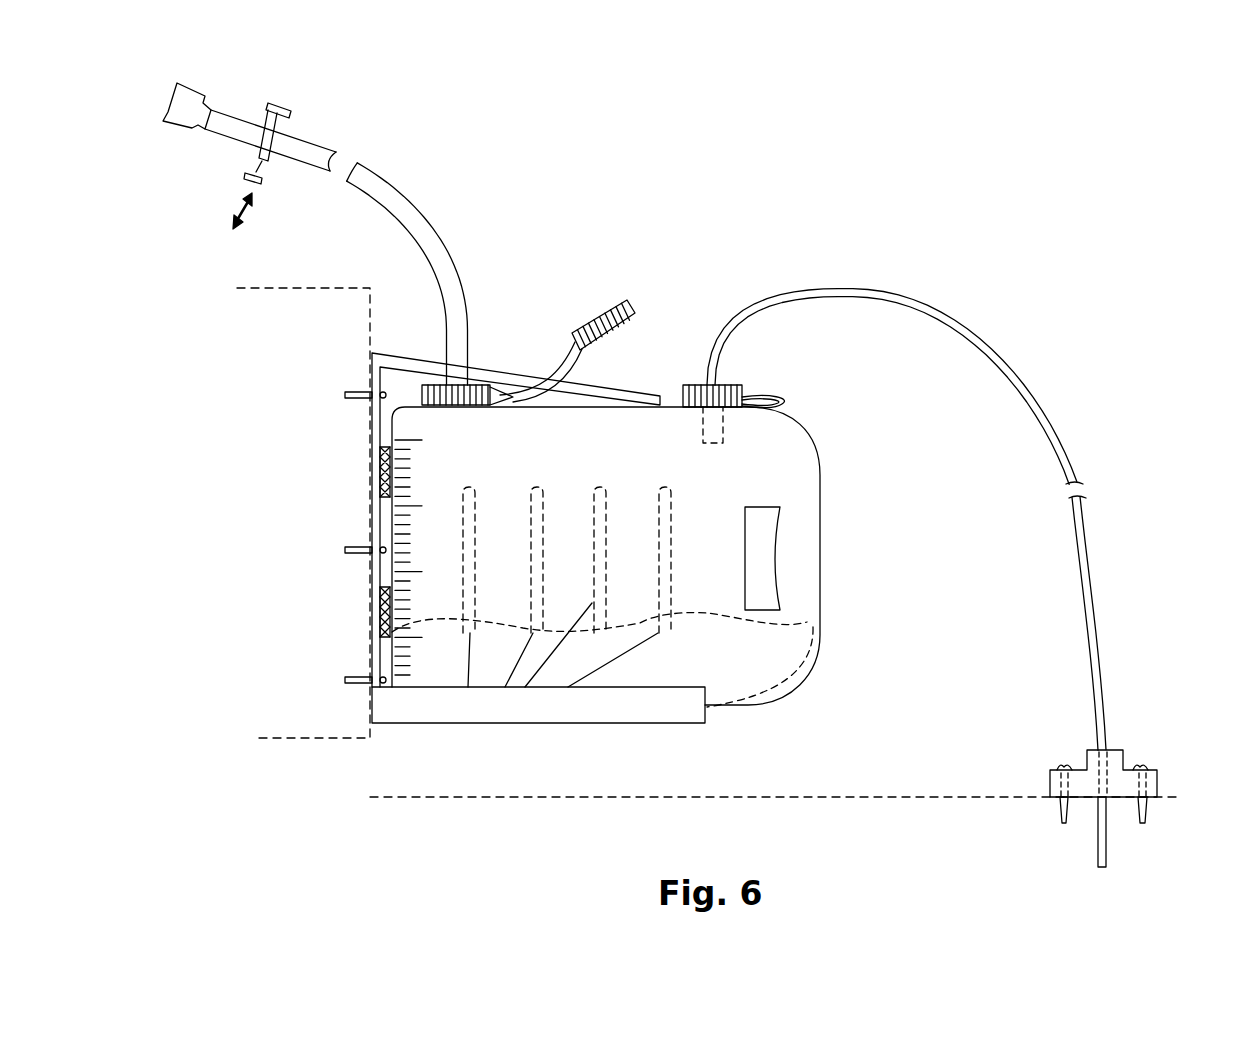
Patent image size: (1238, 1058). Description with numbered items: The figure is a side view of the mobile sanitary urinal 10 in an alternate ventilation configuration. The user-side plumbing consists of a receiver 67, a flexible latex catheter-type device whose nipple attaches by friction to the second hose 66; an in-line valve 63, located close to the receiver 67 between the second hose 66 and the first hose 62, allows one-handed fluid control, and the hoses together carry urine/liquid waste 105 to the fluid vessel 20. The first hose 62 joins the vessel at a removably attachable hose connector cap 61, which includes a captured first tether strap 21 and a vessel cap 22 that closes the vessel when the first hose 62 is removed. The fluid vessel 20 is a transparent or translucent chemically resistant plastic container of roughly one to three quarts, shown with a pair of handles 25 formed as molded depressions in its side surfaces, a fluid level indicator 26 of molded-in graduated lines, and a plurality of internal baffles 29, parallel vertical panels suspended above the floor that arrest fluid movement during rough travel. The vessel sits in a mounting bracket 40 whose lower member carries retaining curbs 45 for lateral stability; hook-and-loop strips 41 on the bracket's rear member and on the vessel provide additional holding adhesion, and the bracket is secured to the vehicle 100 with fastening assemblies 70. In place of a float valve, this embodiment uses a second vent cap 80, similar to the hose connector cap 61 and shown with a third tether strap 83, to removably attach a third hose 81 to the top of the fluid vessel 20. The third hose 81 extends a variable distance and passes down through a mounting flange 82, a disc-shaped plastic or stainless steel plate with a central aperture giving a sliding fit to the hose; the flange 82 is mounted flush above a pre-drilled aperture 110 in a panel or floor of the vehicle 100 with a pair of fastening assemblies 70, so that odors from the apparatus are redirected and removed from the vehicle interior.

The mobile sanitary urinal 10 is at (990, 191).
The fluid vessel 20 is at (820, 547).
The first tether strap 21 is at (548, 373).
The vessel cap 22 is at (598, 340).
The handles 25 is at (780, 593).
The fluid level indicator 26 is at (418, 572).
The internal baffles 29 is at (513, 723).
The mounting bracket 40 is at (643, 390).
The hook-and-loop strips 41 is at (370, 472).
The retaining curbs 45 is at (583, 723).
The hose connector cap 61 is at (447, 390).
The first hose 62 is at (407, 207).
The valve 63 is at (272, 130).
The second hose 66 is at (218, 122).
The receiver 67 is at (187, 95).
The fastening assembly 70 is at (345, 680).
The second vent cap 80 is at (742, 387).
The third hose 81 is at (960, 312).
The mounting flange 82 is at (1118, 748).
The third tether strap 83 is at (787, 407).
The vehicle 100 is at (387, 797).
The urine/liquid waste 105 is at (767, 630).
The pre-drilled aperture 110 is at (1095, 793).